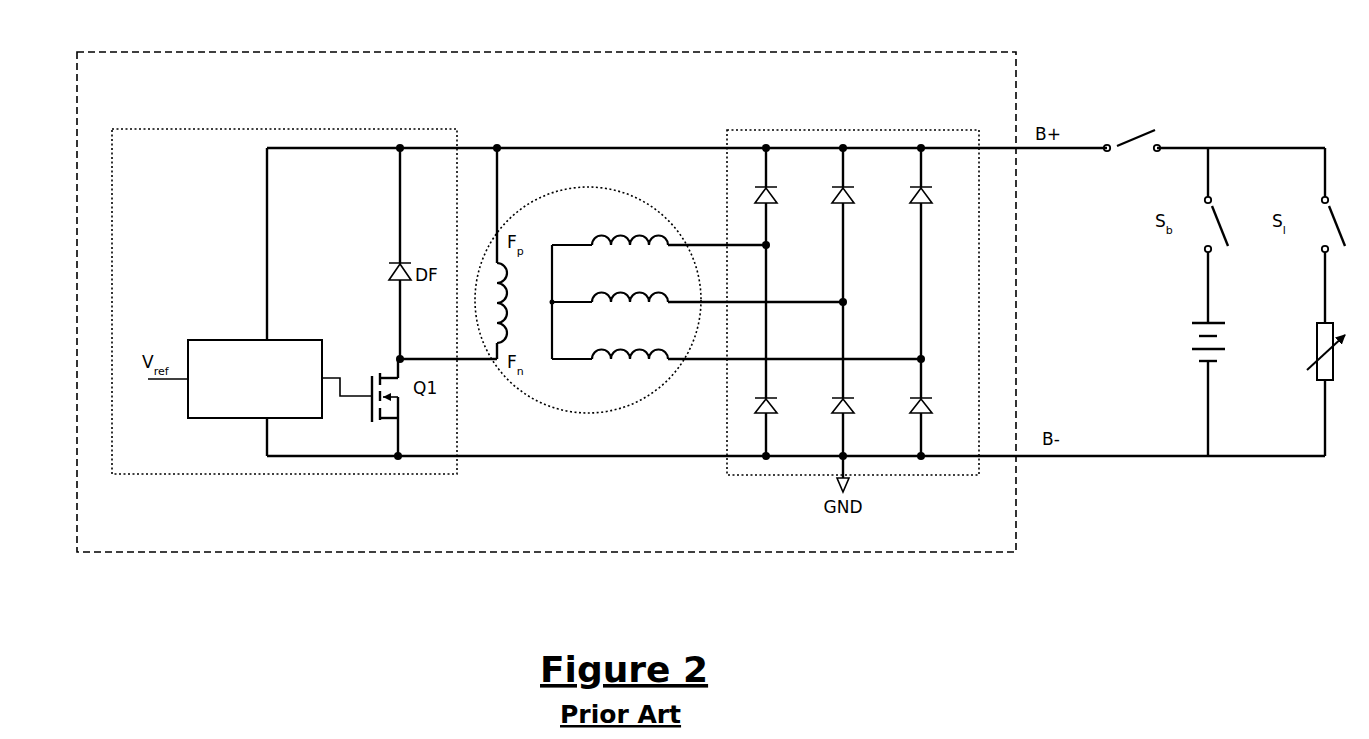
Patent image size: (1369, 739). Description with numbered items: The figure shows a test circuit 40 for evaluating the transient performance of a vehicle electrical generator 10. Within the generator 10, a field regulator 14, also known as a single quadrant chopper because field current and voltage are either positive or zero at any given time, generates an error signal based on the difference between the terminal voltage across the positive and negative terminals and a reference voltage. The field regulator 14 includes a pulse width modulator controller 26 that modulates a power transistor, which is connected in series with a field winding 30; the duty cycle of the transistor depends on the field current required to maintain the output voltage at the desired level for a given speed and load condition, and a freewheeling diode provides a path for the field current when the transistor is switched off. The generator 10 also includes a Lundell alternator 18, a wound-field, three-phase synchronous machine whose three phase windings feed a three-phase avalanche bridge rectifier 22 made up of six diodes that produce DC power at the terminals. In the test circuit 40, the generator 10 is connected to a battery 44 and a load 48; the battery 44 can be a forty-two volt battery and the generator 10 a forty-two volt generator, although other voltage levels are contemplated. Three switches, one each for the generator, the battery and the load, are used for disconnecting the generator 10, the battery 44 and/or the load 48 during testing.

The vehicle electrical generator 10 is at (695, 52).
The field regulator 14 is at (332, 128).
The Lundell alternator 18 is at (635, 195).
The 3-phase avalanche bridge rectifier 22 is at (877, 128).
The pulse width modulator (PWM) controller 26 is at (292, 340).
The field winding 30 is at (509, 297).
The test circuit 40 is at (1135, 97).
The battery 44 is at (1168, 327).
The load 48 is at (1317, 342).